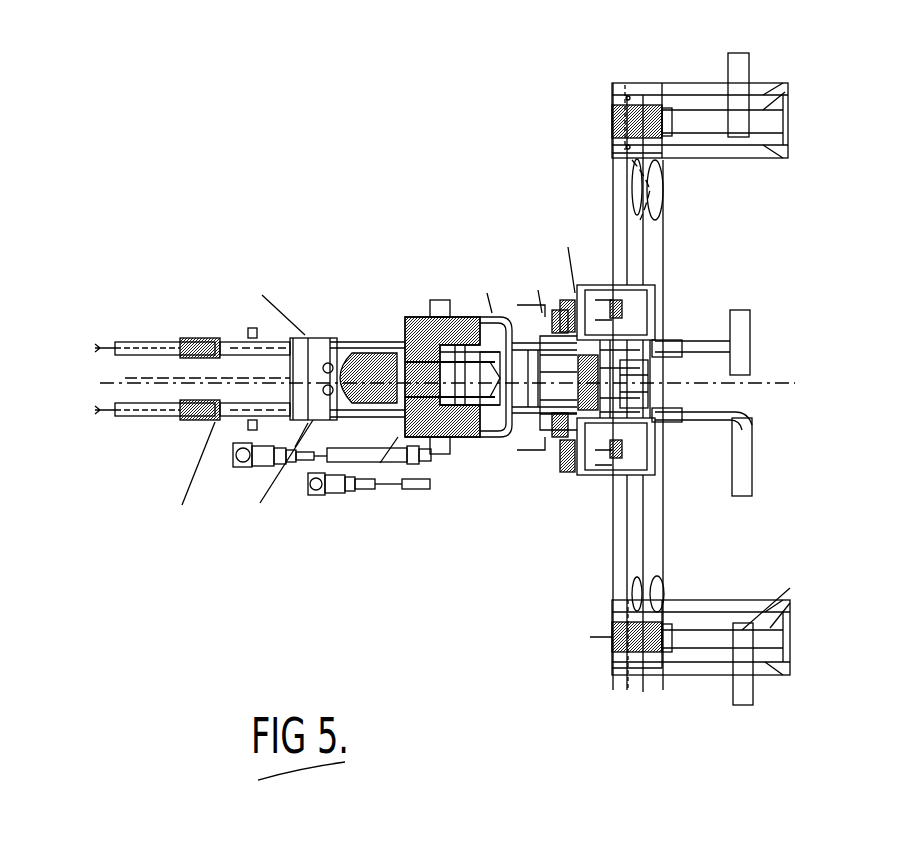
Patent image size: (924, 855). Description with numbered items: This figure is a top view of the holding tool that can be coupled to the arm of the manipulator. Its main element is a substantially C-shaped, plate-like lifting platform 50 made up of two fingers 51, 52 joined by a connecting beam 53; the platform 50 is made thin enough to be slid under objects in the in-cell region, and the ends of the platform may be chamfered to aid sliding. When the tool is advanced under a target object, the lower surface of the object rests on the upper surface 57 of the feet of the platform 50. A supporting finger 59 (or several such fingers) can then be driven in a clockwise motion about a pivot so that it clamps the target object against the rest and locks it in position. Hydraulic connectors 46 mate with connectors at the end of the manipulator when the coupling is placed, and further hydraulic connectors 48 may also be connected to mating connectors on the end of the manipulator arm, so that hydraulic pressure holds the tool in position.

The hydraulic connectors 46 is at (258, 468).
The further hydraulic connectors 48 is at (187, 293).
The lifting platform 50 is at (760, 83).
The finger 51 is at (824, 119).
The finger 52 is at (790, 635).
The connecting beam 53 is at (672, 550).
The upper surface 57 is at (785, 92).
The supporting finger 59 is at (743, 328).